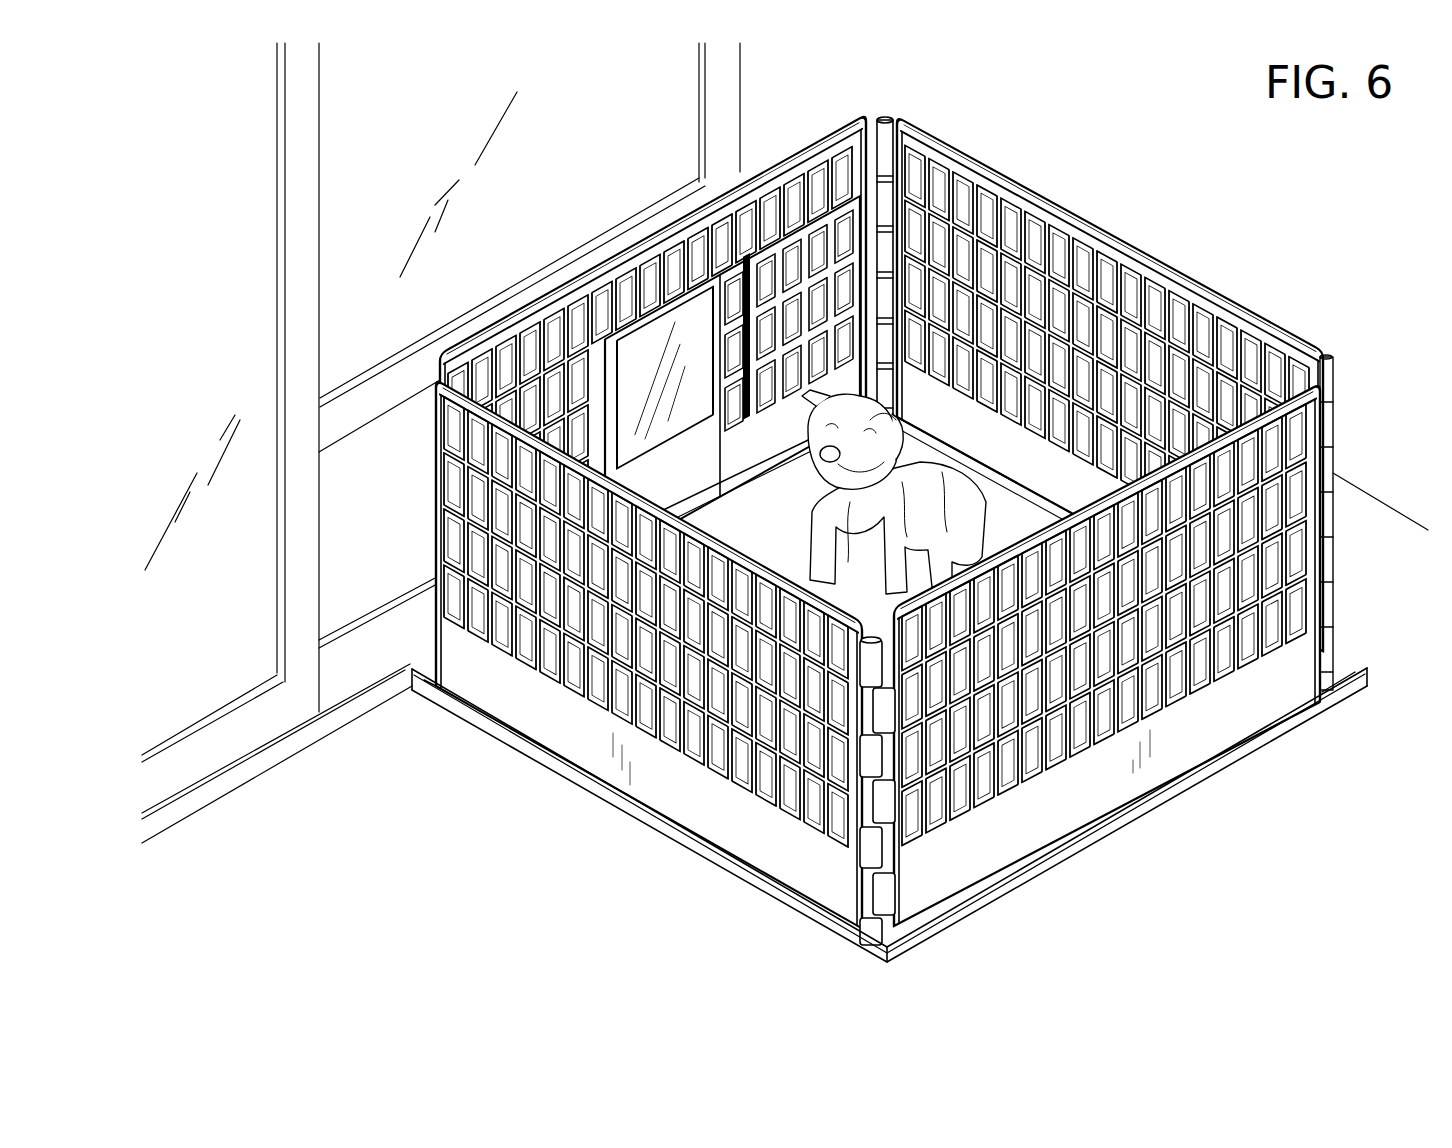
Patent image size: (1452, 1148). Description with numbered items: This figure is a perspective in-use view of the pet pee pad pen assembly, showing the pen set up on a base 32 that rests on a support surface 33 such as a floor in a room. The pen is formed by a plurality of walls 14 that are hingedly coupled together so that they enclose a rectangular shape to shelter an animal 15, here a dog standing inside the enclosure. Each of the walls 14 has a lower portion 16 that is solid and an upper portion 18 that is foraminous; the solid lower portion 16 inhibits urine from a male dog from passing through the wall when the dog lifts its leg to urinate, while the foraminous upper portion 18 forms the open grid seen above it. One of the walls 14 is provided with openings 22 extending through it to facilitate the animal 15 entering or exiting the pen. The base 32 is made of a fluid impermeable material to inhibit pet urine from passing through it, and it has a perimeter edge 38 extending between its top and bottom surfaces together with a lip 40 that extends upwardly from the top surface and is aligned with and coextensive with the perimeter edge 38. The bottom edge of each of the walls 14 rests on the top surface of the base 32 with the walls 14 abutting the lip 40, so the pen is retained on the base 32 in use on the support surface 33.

The walls 14 is at (916, 499).
The animal 15 is at (918, 467).
The lower portion 16 is at (687, 817).
The upper portion 18 is at (670, 660).
The openings 22 is at (636, 417).
The base 32 is at (916, 768).
The support surface 33 is at (366, 740).
The perimeter edge 38 is at (1227, 760).
The lip 40 is at (1350, 657).